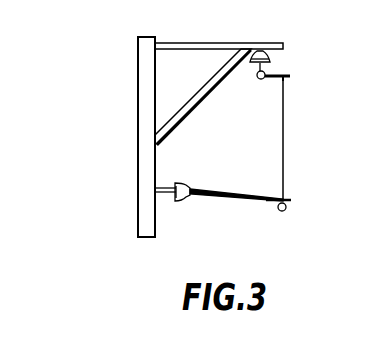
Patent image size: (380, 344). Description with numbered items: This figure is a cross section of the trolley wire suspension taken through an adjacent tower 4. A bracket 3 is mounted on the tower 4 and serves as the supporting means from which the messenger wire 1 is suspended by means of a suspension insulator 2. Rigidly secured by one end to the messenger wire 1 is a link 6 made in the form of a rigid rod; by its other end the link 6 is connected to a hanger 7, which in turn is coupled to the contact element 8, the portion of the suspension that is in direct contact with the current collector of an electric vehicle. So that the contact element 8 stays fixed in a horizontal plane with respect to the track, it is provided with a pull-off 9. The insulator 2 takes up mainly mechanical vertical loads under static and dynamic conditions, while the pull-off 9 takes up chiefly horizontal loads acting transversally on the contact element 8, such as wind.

The messenger wire 1 is at (258, 78).
The suspension insulator 2 is at (270, 59).
The bracket 3 is at (190, 110).
The tower 4 is at (144, 73).
The link 6 is at (287, 78).
The hanger 7 is at (284, 142).
The contact element 8 is at (282, 211).
The pull-off 9 is at (212, 202).